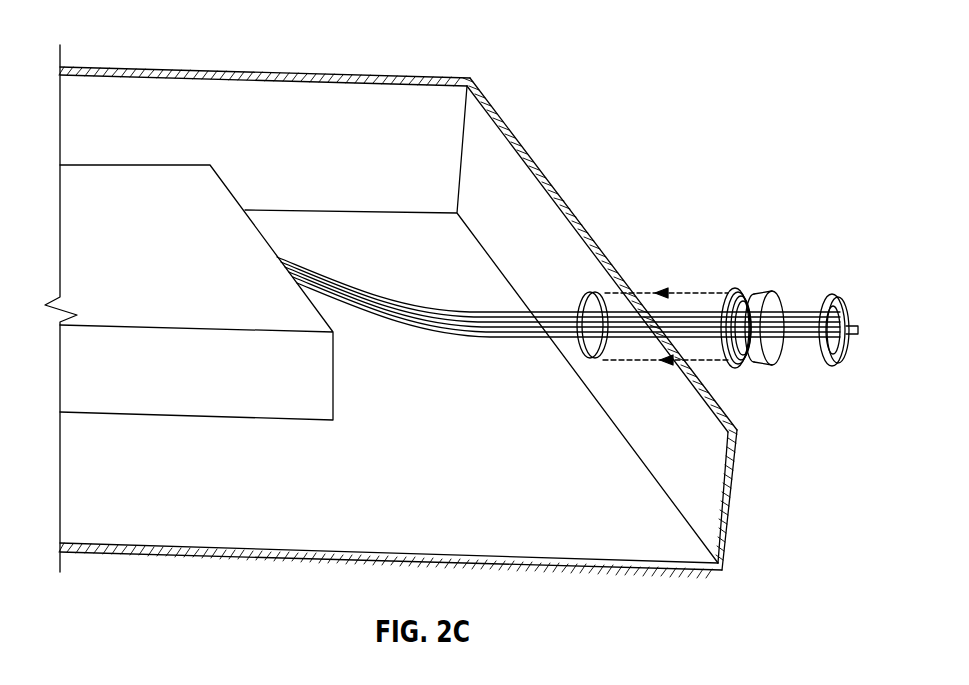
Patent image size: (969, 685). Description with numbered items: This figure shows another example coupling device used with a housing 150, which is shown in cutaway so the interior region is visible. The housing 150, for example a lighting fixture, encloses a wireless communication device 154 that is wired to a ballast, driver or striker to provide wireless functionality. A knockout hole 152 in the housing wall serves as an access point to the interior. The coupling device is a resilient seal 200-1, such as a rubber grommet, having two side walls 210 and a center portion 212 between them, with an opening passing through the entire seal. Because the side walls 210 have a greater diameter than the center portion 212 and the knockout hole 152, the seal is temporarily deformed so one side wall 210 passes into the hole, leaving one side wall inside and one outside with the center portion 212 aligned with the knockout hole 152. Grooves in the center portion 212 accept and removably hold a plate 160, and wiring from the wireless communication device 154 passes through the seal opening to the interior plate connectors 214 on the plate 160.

The housing 150 is at (343, 73).
The knockout hole 152 is at (582, 296).
The wireless communication device 154 is at (155, 166).
The plate 160 is at (825, 337).
The seal 200-1 is at (782, 329).
The side walls 210 is at (734, 370).
The center portion 212 is at (774, 292).
The interior plate connectors 214 is at (826, 311).